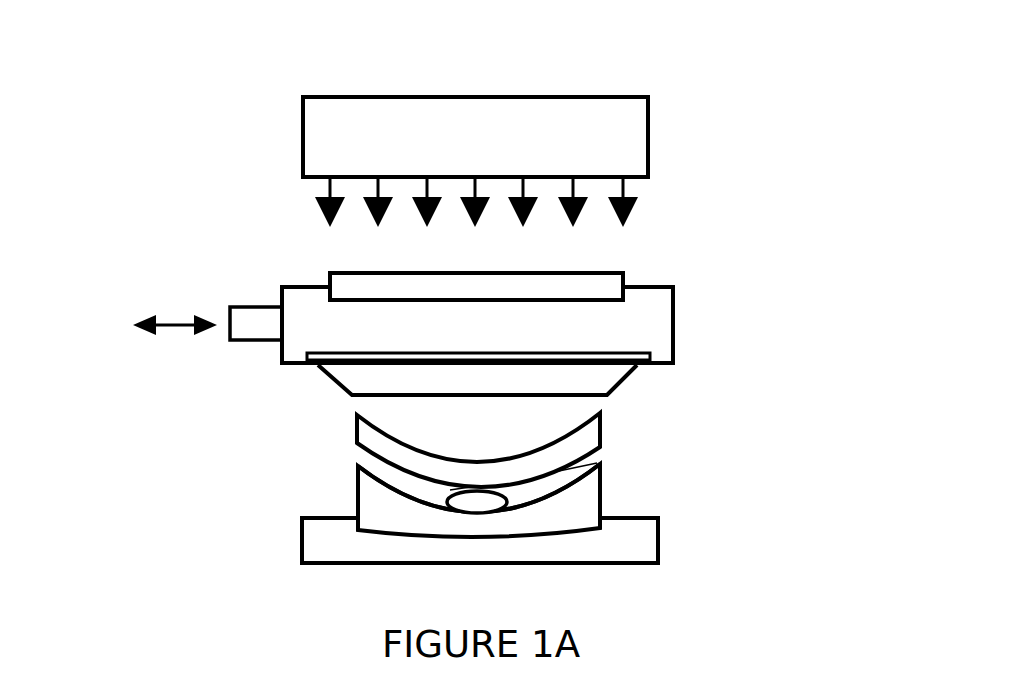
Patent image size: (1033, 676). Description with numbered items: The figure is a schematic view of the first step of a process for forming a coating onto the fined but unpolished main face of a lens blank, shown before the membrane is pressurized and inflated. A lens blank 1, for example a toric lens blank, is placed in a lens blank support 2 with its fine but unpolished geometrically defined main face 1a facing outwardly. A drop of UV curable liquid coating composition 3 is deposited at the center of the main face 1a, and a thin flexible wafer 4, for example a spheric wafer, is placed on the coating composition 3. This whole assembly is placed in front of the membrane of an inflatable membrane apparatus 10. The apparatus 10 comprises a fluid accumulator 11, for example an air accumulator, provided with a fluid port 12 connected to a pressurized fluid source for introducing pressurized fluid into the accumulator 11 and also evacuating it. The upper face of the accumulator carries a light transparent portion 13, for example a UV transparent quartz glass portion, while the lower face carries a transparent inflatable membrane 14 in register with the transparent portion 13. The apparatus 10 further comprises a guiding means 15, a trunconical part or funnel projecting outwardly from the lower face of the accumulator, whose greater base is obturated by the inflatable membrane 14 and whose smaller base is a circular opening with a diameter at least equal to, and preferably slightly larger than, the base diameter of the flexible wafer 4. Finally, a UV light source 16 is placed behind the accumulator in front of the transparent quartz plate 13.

The lens blank 1 is at (602, 493).
The geometrically defined main face 1a is at (380, 474).
The lens blank support 2 is at (302, 530).
The UV curable liquid coating composition 3 is at (598, 462).
The flexible wafer 4 is at (597, 422).
The inflatable membrane apparatus 10 is at (262, 279).
The fluid accumulator 11 is at (298, 293).
The fluid port 12 is at (230, 308).
The light transparent portion 13 is at (623, 273).
The inflatable membrane 14 is at (633, 350).
The guiding means 15 is at (337, 383).
The UV light source 16 is at (648, 125).